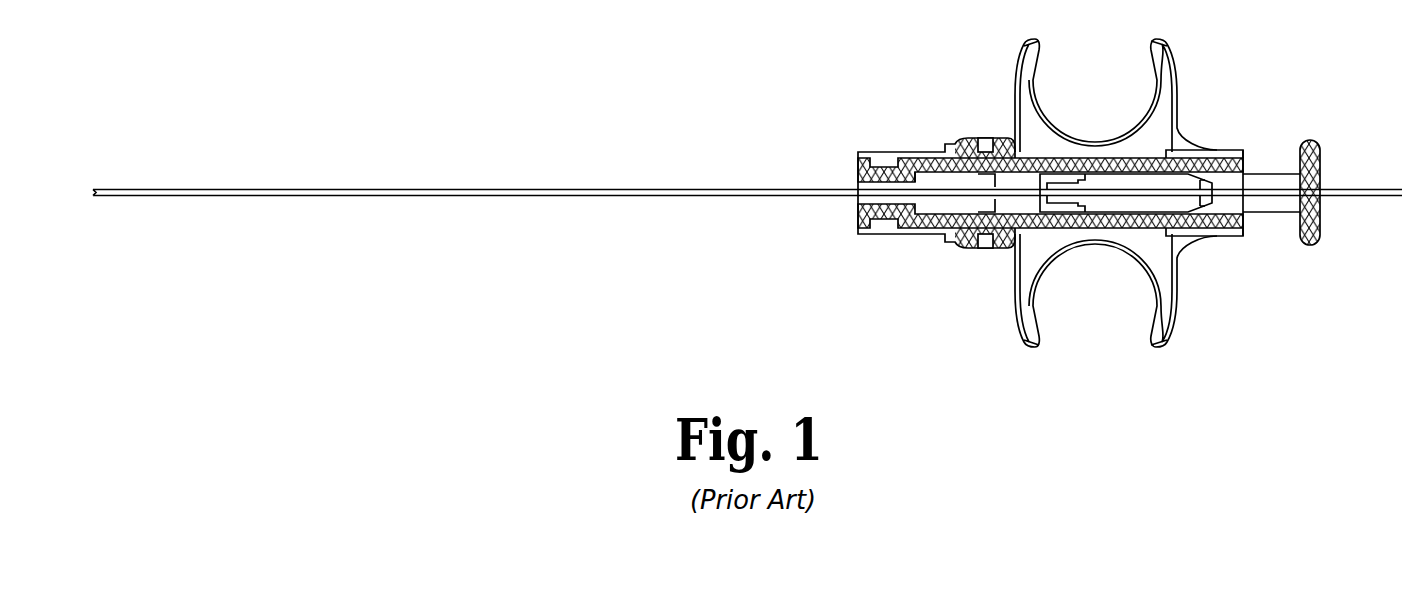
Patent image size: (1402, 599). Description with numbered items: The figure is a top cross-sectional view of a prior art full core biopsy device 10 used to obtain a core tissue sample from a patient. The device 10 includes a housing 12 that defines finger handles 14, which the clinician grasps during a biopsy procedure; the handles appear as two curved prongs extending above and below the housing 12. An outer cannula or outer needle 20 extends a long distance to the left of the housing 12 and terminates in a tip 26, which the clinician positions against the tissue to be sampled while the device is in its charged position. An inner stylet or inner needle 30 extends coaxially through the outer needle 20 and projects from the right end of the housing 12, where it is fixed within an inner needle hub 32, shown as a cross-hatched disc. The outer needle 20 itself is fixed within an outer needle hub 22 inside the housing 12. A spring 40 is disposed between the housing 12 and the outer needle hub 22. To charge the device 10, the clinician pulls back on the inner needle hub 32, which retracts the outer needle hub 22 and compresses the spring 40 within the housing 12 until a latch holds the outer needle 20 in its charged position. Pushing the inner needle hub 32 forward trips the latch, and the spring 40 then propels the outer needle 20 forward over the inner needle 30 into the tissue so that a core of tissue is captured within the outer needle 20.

The core biopsy device 10 is at (641, 318).
The housing 12 is at (1183, 142).
The finger handles 14 is at (1168, 322).
The outer needle 20 is at (946, 192).
The outer needle hub 22 is at (1052, 226).
The tip 26 is at (120, 197).
The inner needle 30 is at (1337, 189).
The inner needle hub 32 is at (1308, 140).
The spring 40 is at (1197, 237).